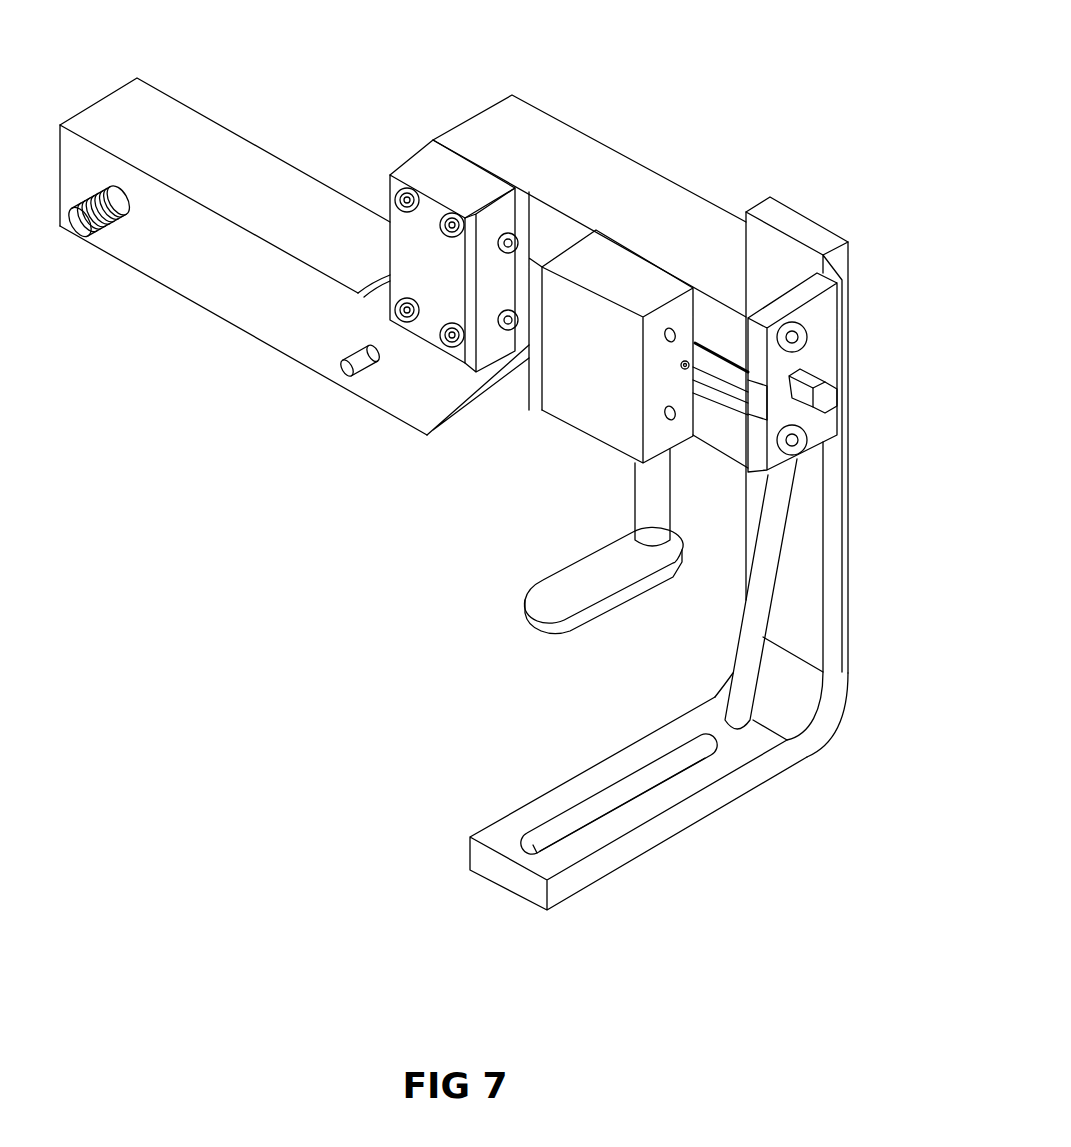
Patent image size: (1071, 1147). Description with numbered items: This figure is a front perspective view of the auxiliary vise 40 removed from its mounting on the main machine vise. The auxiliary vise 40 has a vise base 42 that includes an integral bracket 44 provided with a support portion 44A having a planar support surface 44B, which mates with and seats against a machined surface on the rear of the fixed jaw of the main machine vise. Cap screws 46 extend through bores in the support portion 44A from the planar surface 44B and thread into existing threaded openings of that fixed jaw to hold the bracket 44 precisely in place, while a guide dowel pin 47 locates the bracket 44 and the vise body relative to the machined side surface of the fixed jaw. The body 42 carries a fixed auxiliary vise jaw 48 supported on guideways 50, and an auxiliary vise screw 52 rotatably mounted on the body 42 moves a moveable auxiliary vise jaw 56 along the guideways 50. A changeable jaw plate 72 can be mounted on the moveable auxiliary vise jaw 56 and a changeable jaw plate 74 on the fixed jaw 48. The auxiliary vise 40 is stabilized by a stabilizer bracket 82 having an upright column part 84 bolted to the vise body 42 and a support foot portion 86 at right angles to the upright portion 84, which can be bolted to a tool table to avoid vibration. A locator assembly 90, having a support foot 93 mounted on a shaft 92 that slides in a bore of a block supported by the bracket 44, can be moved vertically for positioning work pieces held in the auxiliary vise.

The auxiliary vise 40 is at (318, 374).
The vise base 42 is at (557, 138).
The bracket 44 is at (225, 184).
The support portion 44A is at (197, 130).
The planar support surface 44B is at (212, 277).
The cap screws 46 is at (107, 237).
The guide dowel pin 47 is at (360, 367).
The fixed auxiliary vise jaw 48 is at (427, 167).
The guideways 50 is at (557, 232).
The auxiliary vise screw 52 is at (810, 388).
The moveable auxiliary vise jaw 56 is at (590, 392).
The changeable jaw plate 72 is at (530, 397).
The changeable jaw plate 74 is at (513, 215).
The stabilizer bracket 82 is at (747, 600).
The upright column part 84 is at (840, 592).
The support foot portion 86 is at (597, 867).
The locator assembly 90 is at (548, 614).
The shaft 92 is at (640, 483).
The support foot 93 is at (553, 603).